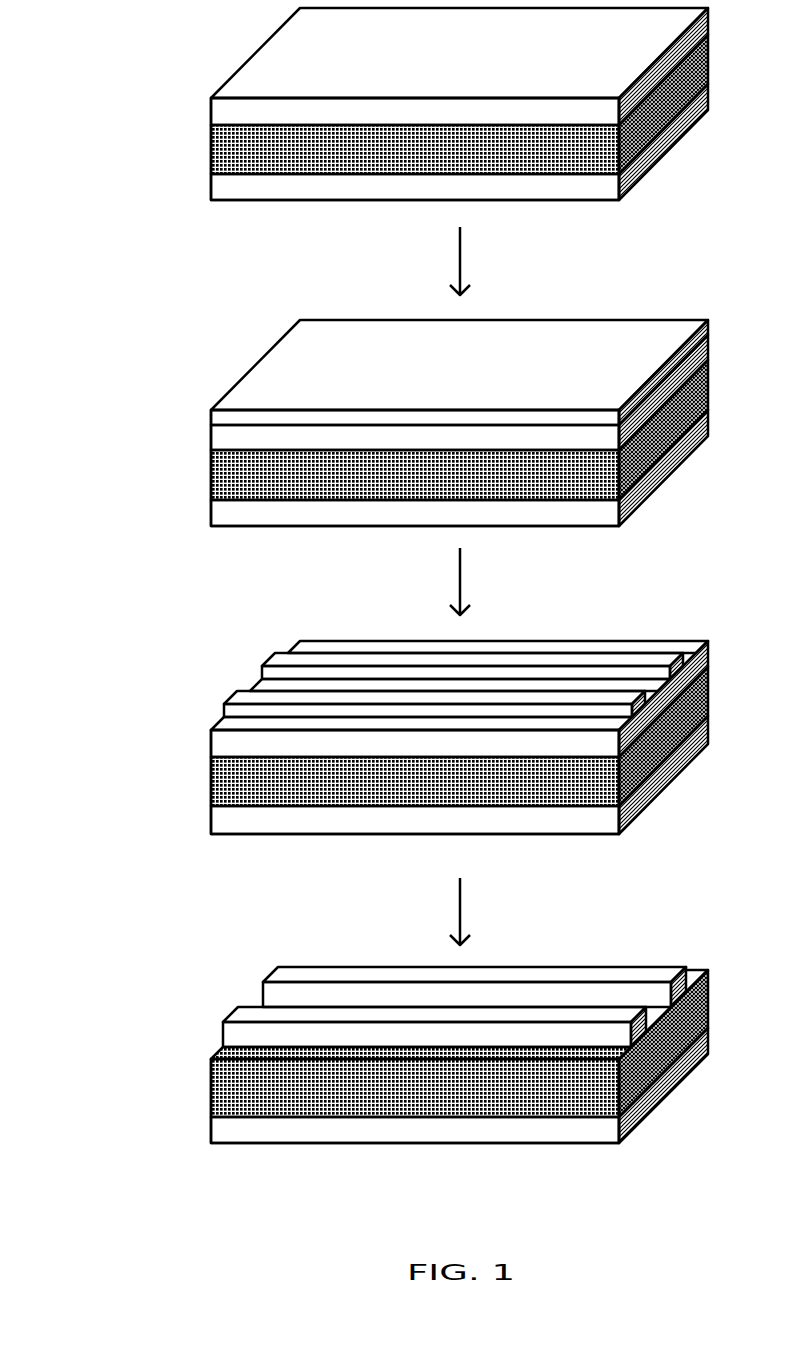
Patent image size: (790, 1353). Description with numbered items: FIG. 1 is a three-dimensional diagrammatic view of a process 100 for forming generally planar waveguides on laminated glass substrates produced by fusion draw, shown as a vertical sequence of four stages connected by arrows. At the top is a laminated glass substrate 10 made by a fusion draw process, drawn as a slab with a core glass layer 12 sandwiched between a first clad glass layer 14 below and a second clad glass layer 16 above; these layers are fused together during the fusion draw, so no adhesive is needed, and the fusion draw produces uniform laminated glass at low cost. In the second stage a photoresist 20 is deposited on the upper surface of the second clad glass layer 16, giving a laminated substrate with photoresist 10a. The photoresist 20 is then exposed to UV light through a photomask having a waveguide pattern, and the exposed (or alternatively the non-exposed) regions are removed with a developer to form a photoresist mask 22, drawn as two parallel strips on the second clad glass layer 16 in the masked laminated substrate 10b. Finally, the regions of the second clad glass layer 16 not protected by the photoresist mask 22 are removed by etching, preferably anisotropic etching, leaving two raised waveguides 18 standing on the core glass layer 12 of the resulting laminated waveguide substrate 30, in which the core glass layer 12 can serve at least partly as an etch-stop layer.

The process 100 is at (381, 635).
The laminated glass substrate 10 is at (224, 229).
The laminated substrate with photoresist 10a is at (236, 551).
The masked laminated substrate 10b is at (231, 871).
The laminated waveguide substrate 30 is at (256, 1171).
The core glass layer 12 is at (227, 143).
The first clad glass layer 14 is at (227, 183).
The second clad glass layer 16 is at (227, 111).
The waveguides 18 is at (280, 970).
The photoresist 20 is at (215, 420).
The photoresist mask 22 is at (280, 655).